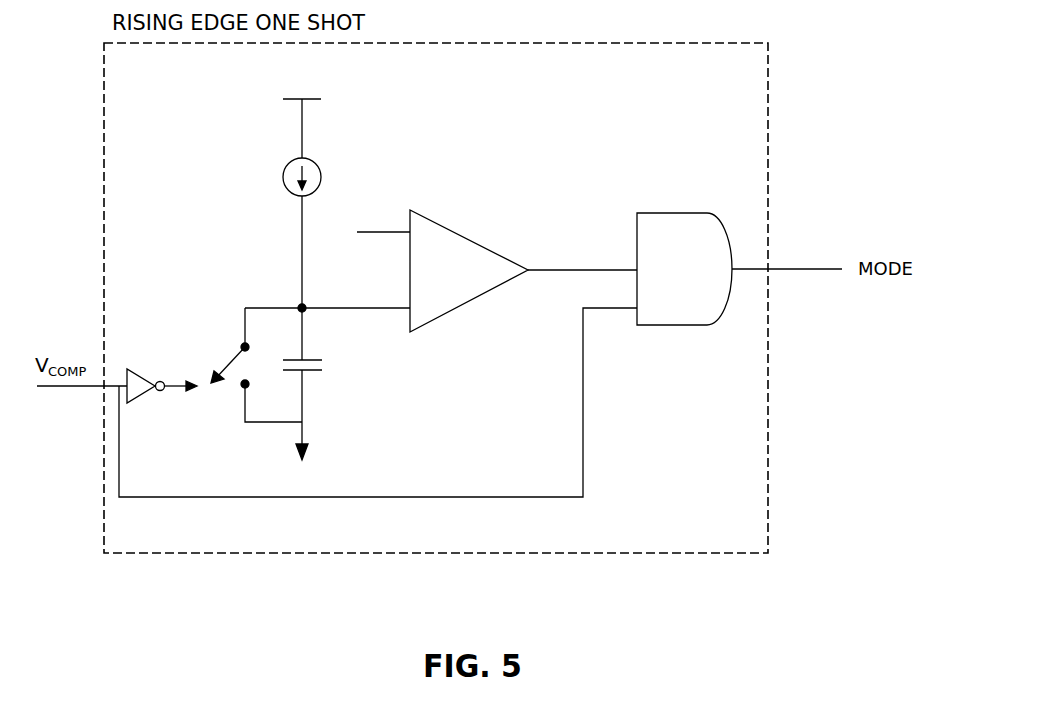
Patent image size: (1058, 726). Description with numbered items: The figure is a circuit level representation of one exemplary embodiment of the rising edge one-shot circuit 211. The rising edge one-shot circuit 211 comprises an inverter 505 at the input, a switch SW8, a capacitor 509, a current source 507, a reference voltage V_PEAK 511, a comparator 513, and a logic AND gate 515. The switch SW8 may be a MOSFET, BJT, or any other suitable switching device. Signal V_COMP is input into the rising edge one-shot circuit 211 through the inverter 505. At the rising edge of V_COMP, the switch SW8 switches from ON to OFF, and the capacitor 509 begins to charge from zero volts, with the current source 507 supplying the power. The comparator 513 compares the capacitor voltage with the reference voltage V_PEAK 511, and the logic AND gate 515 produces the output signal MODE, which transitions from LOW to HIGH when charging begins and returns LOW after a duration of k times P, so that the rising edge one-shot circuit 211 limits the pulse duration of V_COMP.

The rising edge one-shot circuit 211 is at (605, 553).
The inverter 505 is at (141, 405).
The current source 507 is at (284, 163).
The capacitor 509 is at (330, 353).
The reference voltage V_PEAK 511 is at (394, 230).
The comparator 513 is at (460, 223).
The logic AND gate 515 is at (673, 205).
The switch SW8 is at (249, 365).